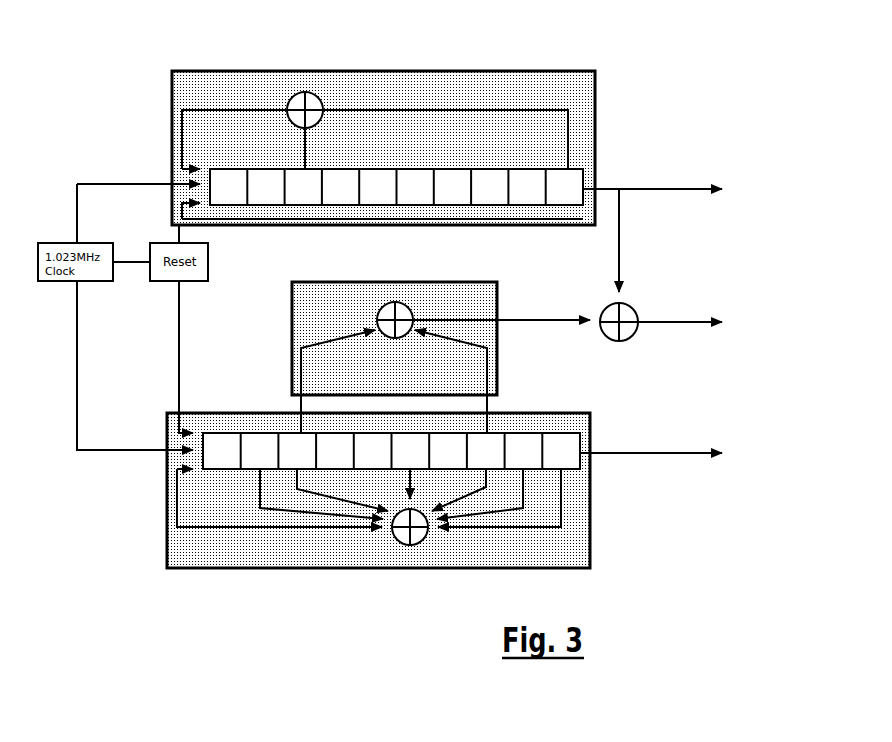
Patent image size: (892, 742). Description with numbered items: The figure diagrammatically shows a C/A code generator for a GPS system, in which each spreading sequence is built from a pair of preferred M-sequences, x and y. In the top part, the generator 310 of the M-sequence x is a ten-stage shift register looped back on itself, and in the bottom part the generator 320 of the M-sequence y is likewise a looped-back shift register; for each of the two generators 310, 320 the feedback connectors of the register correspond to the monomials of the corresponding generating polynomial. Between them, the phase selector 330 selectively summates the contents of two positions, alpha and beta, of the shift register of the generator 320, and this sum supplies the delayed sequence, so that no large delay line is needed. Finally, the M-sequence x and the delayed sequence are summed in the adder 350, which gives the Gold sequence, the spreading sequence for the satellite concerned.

The generator of the M-sequence x 310 is at (585, 72).
The generator of the M-sequence y 320 is at (237, 568).
The phase selector 330 is at (497, 337).
The summing element 350 is at (632, 305).